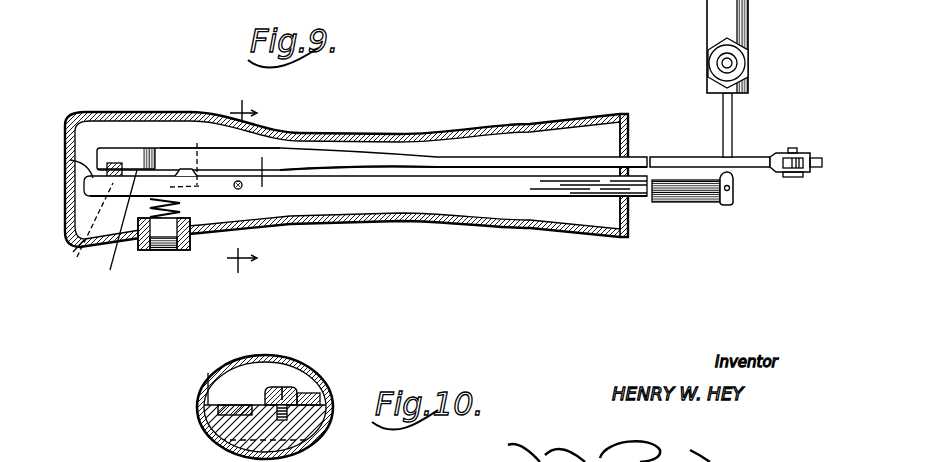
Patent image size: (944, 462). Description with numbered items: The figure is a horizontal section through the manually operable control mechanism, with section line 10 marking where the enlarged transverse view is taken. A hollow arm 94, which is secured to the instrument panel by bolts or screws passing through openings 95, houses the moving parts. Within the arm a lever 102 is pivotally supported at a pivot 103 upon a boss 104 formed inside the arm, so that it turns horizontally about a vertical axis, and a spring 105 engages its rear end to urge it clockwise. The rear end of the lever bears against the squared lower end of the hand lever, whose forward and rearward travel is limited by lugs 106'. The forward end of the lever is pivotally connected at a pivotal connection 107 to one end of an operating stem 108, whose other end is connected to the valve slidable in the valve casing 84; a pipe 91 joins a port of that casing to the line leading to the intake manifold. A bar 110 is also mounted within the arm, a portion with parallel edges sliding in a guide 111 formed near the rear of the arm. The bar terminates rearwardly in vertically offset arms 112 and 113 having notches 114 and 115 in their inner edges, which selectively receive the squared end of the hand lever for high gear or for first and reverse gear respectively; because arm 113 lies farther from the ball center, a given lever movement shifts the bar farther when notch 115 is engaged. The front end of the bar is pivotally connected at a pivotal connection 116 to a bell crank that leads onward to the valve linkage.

In FIG. 9, the section line 10— 10 is at (238, 193).
In FIG. 9, the valve casing 84 is at (707, 21).
In FIG. 9, the pipe 91 is at (734, 64).
In FIG. 9, the hollow arm 94 is at (562, 123).
In FIG. 10, the hollow arm 94 is at (232, 360).
In FIG. 9, the openings 95 is at (630, 126).
In FIG. 9, the lever 102 is at (365, 183).
In FIG. 10, the lever 102 is at (268, 390).
In FIG. 9, the pivot 103 is at (238, 189).
In FIG. 10, the pivot 103 is at (286, 389).
In FIG. 9, the boss 104 is at (262, 197).
In FIG. 10, the boss 104 is at (310, 392).
In FIG. 9, the spring 105 is at (157, 250).
In FIG. 9, the lugs 106' is at (108, 212).
In FIG. 9, the pivotal connection 107 is at (735, 190).
In FIG. 9, the operating stem 108 is at (724, 126).
In FIG. 9, the bar 110 is at (443, 152).
In FIG. 10, the bar 110 is at (241, 405).
In FIG. 9, the guide 111 is at (213, 150).
In FIG. 10, the guide 111 is at (222, 426).
In FIG. 9, the arm 112 is at (125, 157).
In FIG. 9, the arm 113 is at (206, 187).
In FIG. 9, the notch 114 is at (112, 163).
In FIG. 9, the notch 115 is at (68, 255).
In FIG. 9, the pivotal connection 116 is at (793, 148).